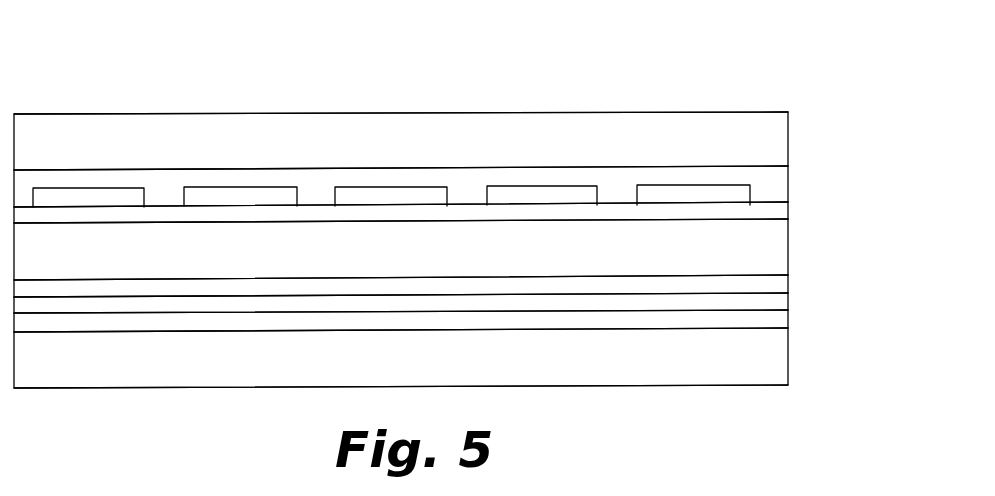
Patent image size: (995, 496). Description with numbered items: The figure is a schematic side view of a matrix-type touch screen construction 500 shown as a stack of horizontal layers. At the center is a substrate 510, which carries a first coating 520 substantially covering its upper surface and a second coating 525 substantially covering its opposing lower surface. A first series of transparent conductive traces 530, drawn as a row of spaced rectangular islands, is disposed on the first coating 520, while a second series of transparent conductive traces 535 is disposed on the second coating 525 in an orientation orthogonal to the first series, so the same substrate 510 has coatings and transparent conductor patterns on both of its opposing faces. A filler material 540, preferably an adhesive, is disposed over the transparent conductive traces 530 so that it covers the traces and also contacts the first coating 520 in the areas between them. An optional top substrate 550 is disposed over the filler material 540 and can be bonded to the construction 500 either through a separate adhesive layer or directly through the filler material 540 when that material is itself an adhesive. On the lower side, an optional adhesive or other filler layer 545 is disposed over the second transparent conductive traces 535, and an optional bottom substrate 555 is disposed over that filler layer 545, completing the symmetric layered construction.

The touch screen construction 500 is at (348, 77).
The top substrate 550 is at (527, 120).
The filler material 540 is at (778, 178).
The first series of transparent conductive traces 530 is at (647, 190).
The first coating 520 is at (780, 210).
The substrate 510 is at (778, 248).
The second coating 525 is at (780, 283).
The second series of transparent conductive traces 535 is at (780, 302).
The filler layer 545 is at (777, 318).
The bottom substrate 555 is at (668, 375).